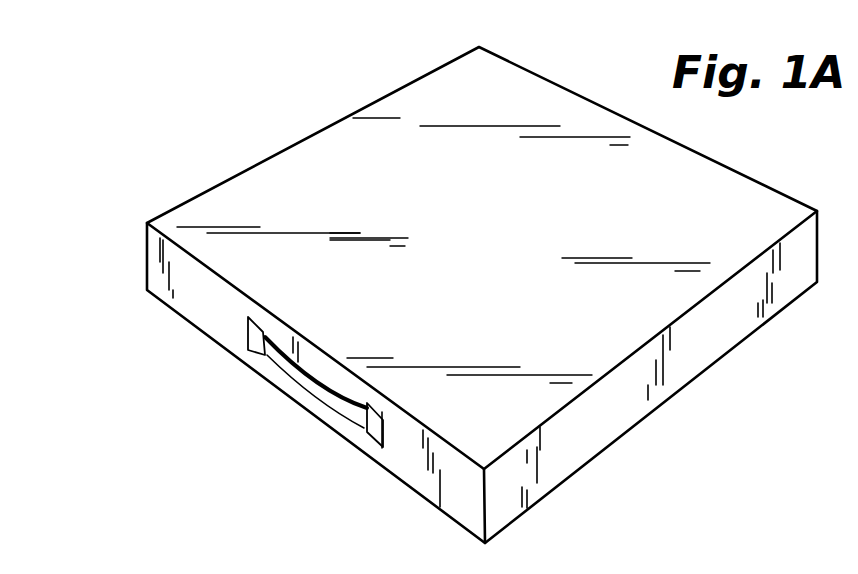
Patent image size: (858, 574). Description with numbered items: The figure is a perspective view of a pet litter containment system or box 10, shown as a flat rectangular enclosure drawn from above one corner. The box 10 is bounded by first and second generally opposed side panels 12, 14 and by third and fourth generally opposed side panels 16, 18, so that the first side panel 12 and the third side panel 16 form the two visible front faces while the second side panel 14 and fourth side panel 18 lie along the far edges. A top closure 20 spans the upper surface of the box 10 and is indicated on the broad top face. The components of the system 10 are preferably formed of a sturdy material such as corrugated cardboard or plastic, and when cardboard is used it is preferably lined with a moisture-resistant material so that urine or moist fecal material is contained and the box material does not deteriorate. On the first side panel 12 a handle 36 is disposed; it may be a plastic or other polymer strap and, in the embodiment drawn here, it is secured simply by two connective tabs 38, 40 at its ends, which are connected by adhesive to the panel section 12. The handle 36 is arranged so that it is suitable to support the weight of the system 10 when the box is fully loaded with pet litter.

The pet litter containment system 10 is at (300, 94).
The first side panel 12 is at (208, 318).
The second side panel 14 is at (783, 195).
The third side panel 16 is at (583, 432).
The fourth side panel 18 is at (201, 191).
The top closure 20 is at (497, 271).
The handle 36 is at (300, 399).
The connective tab 38 is at (367, 423).
The connective tab 40 is at (257, 342).